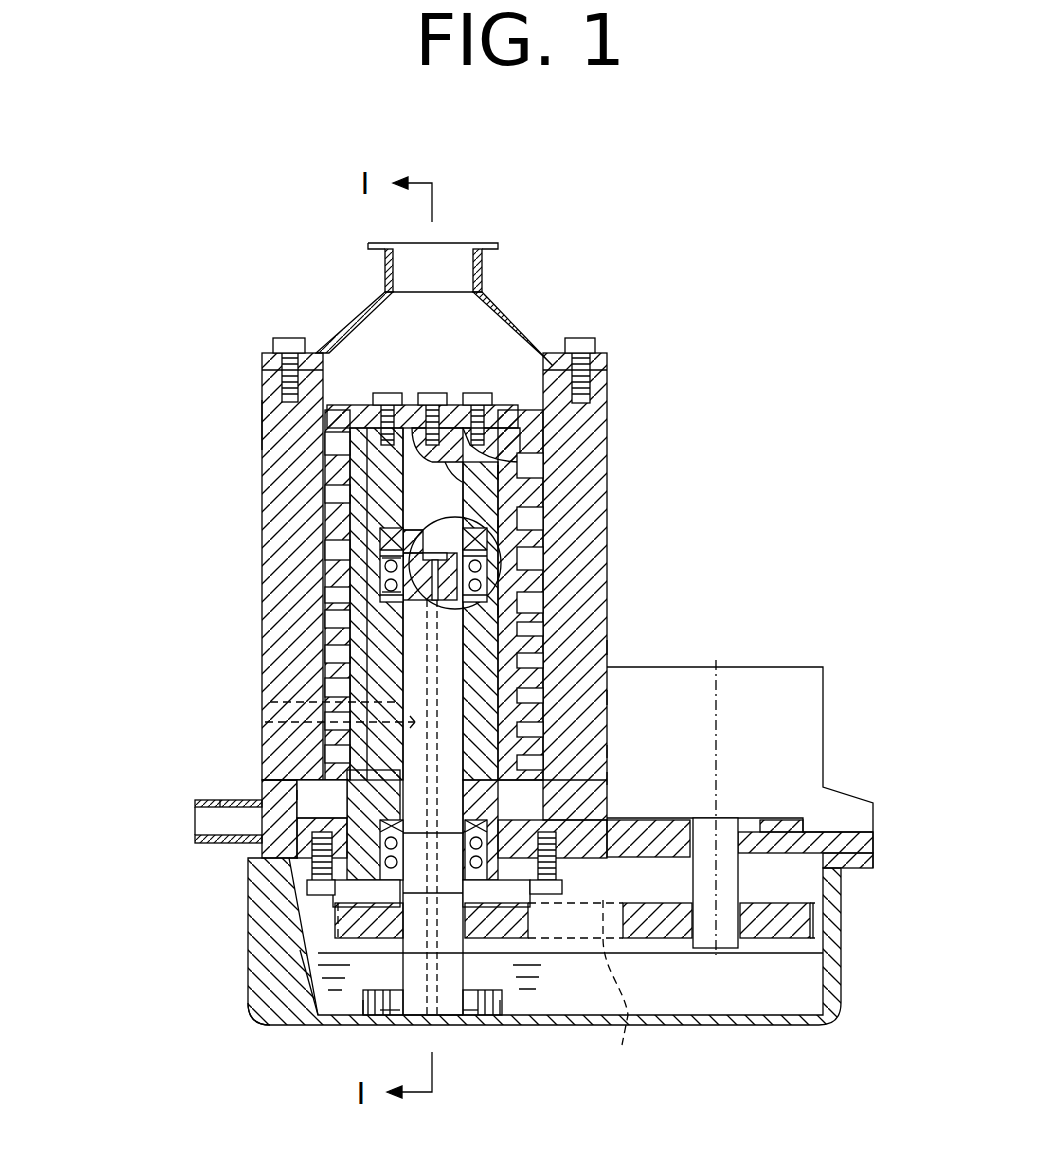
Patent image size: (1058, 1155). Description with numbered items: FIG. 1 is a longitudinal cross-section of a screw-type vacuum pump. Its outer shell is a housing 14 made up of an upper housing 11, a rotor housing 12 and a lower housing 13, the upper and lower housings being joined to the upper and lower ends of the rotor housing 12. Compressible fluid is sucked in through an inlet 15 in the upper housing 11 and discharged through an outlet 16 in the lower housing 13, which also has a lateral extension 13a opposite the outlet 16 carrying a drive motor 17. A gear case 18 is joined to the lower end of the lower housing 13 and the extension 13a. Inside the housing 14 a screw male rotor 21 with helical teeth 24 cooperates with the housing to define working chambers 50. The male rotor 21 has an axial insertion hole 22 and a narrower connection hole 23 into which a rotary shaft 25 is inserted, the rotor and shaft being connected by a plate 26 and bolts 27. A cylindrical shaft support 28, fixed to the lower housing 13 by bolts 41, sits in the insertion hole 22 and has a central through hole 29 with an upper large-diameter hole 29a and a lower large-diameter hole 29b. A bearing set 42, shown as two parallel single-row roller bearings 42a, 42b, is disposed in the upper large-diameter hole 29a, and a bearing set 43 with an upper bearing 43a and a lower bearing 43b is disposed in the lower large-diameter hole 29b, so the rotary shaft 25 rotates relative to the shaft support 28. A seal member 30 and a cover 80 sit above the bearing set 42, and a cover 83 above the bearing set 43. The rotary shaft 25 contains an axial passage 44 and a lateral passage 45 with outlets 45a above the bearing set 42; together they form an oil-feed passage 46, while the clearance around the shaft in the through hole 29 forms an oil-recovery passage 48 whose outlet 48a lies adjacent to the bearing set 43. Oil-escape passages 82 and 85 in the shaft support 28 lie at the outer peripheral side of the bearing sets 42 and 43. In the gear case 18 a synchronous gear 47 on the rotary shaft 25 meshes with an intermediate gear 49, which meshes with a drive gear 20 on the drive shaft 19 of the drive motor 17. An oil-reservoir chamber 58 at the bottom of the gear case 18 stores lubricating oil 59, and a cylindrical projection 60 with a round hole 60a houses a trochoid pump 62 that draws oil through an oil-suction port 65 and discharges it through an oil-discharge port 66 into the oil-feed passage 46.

The upper housing 11 is at (458, 318).
The rotor housing 12 is at (649, 645).
The lower housing 13 is at (493, 862).
The extension 13a is at (843, 844).
The housing 14 is at (383, 579).
The inlet 15 is at (433, 239).
The outlet 16 is at (197, 821).
The drive motor 17 is at (740, 731).
The gear case 18 is at (507, 941).
The drive shaft 19 is at (750, 807).
The drive gear 20 is at (719, 947).
The screw male rotor 21 is at (423, 388).
The insertion hole 22 is at (533, 721).
The connection hole 23 is at (593, 466).
The teeth 24 is at (434, 595).
The rotary shaft 25 is at (356, 604).
The plate 26 is at (444, 398).
The bolts 27 is at (419, 396).
The shaft support 28 is at (349, 735).
The through hole 29 is at (411, 756).
The upper large-diameter hole 29a is at (598, 571).
The lower large-diameter hole 29b is at (293, 860).
The seal member 30 is at (345, 556).
The bolts 41 is at (412, 864).
The bearing set 42 is at (297, 582).
The outer race 42a is at (194, 574).
The inner race 42b is at (194, 595).
The bearing set 43 is at (220, 795).
The upper bearing 43a is at (184, 787).
The passage wall 43b is at (185, 805).
The axial passage 44 is at (311, 700).
The lateral passage 45 is at (576, 521).
The outlets 45a is at (271, 524).
The oil-feed passage 46 is at (314, 720).
The synchronous gear 47 is at (399, 922).
The oil-recovery passage 48 is at (679, 659).
The outlet 48a is at (750, 722).
The intermediate gear 49 is at (619, 987).
The working chambers 50 is at (224, 416).
The oil-reservoir chamber 58 is at (253, 979).
The lubricating oil 59 is at (228, 1032).
The cylindrical projection 60 is at (466, 1037).
The round hole 60a is at (500, 1057).
The trochoid pump 62 is at (362, 1043).
The oil-suction port 65 is at (325, 1033).
The oil-discharge port 66 is at (472, 1045).
The cover 80 is at (330, 563).
The oil-escape passages 82 is at (594, 604).
The cover 83 is at (235, 804).
The oil-escape passages 85 is at (743, 754).